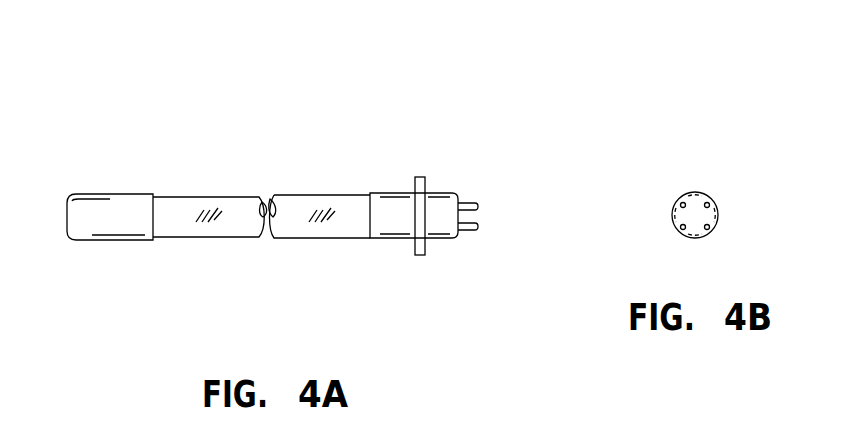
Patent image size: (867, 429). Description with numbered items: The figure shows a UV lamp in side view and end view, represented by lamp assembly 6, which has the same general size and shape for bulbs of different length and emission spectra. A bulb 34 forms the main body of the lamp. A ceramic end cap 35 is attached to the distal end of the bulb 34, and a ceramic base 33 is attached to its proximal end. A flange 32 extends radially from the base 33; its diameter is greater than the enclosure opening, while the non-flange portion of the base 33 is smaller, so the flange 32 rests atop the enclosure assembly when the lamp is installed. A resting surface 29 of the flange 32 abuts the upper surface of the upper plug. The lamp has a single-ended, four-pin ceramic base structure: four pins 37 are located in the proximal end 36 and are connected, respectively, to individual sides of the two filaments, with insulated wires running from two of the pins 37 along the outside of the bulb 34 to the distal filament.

In FIG. 4A, the lamp assembly 6 is at (178, 122).
In FIG. 4A, the resting surface 29 is at (411, 183).
In FIG. 4A, the flange 32 is at (420, 256).
In FIG. 4A, the ceramic base 33 is at (390, 241).
In FIG. 4A, the bulb 34 is at (205, 239).
In FIG. 4A, the ceramic end cap 35 is at (109, 241).
In FIG. 4B, the proximal end 36 is at (699, 192).
In FIG. 4A, the pins 37 is at (465, 232).
In FIG. 4B, the pins 37 is at (683, 202).